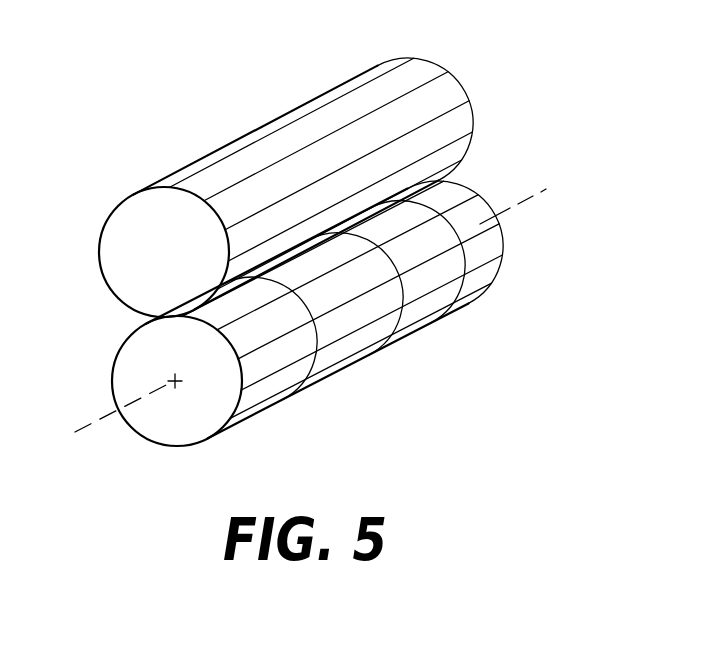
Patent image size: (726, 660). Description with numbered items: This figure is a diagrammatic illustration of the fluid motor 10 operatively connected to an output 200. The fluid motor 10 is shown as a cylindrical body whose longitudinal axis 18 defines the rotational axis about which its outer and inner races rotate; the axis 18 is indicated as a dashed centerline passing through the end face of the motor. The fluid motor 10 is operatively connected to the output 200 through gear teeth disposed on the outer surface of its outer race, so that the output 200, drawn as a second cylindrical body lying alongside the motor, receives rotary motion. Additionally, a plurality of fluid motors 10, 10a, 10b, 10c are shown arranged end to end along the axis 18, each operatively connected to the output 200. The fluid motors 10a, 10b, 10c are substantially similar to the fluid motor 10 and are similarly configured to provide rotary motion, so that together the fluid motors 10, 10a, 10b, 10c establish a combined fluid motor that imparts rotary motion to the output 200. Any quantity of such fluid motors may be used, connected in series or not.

The output 200 is at (410, 110).
The fluid motor 10 is at (275, 398).
The fluid motor 10a is at (355, 357).
The fluid motor 10b is at (427, 322).
The fluid motor 10c is at (473, 291).
The longitudinal axis 18 is at (178, 383).